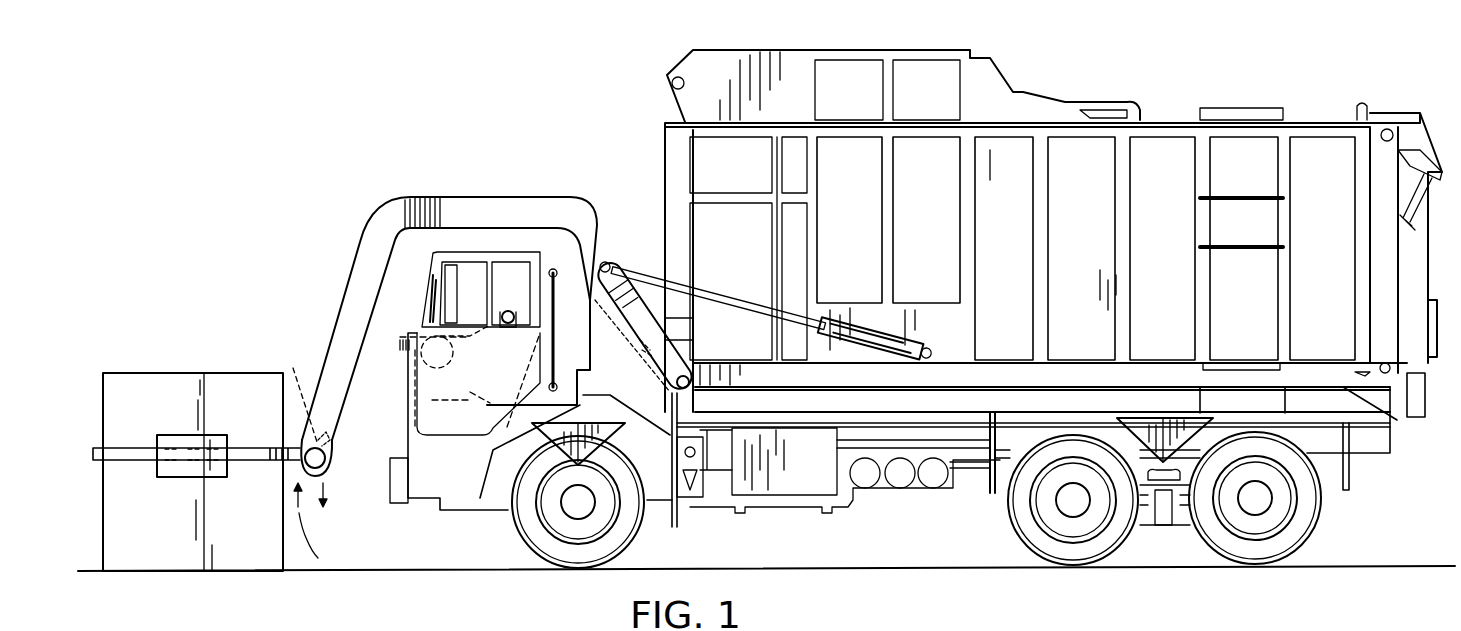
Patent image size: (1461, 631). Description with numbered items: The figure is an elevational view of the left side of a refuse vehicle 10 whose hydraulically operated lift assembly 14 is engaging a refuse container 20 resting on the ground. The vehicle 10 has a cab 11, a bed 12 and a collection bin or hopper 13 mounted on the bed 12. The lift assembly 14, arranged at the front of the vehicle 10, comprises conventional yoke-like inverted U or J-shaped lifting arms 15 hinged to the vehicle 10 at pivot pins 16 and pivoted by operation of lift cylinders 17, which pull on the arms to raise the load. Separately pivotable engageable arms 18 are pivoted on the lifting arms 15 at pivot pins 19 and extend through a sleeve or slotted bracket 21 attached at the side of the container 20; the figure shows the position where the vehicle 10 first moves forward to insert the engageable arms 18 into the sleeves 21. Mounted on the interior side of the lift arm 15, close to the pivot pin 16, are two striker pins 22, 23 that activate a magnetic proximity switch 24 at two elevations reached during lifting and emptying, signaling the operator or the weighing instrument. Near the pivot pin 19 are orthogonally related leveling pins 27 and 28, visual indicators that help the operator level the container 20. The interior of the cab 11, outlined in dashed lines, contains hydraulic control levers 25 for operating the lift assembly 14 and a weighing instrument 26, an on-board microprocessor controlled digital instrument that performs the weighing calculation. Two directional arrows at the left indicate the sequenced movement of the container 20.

The vehicle 10 is at (486, 116).
The cab 11 is at (546, 342).
The bed 12 is at (912, 424).
The collection bin or hopper 13 is at (1020, 120).
The lift assembly 14 is at (297, 233).
The lifting arm 15 is at (460, 197).
The pivot pin 16 is at (669, 325).
The lift cylinder 17 is at (858, 316).
The engageable arm 18 is at (256, 448).
The pivot pin 19 is at (325, 465).
The refuse container 20 is at (108, 373).
The sleeve or slotted bracket 21 is at (162, 477).
The striker pin 22 is at (663, 380).
The striker pin 23 is at (642, 357).
The magnetic proximity switch 24 is at (697, 317).
The hydraulic control levers 25 is at (452, 355).
The weighing instrument 26 is at (508, 310).
The leveling pin 27 is at (334, 437).
The leveling pin 28 is at (302, 399).